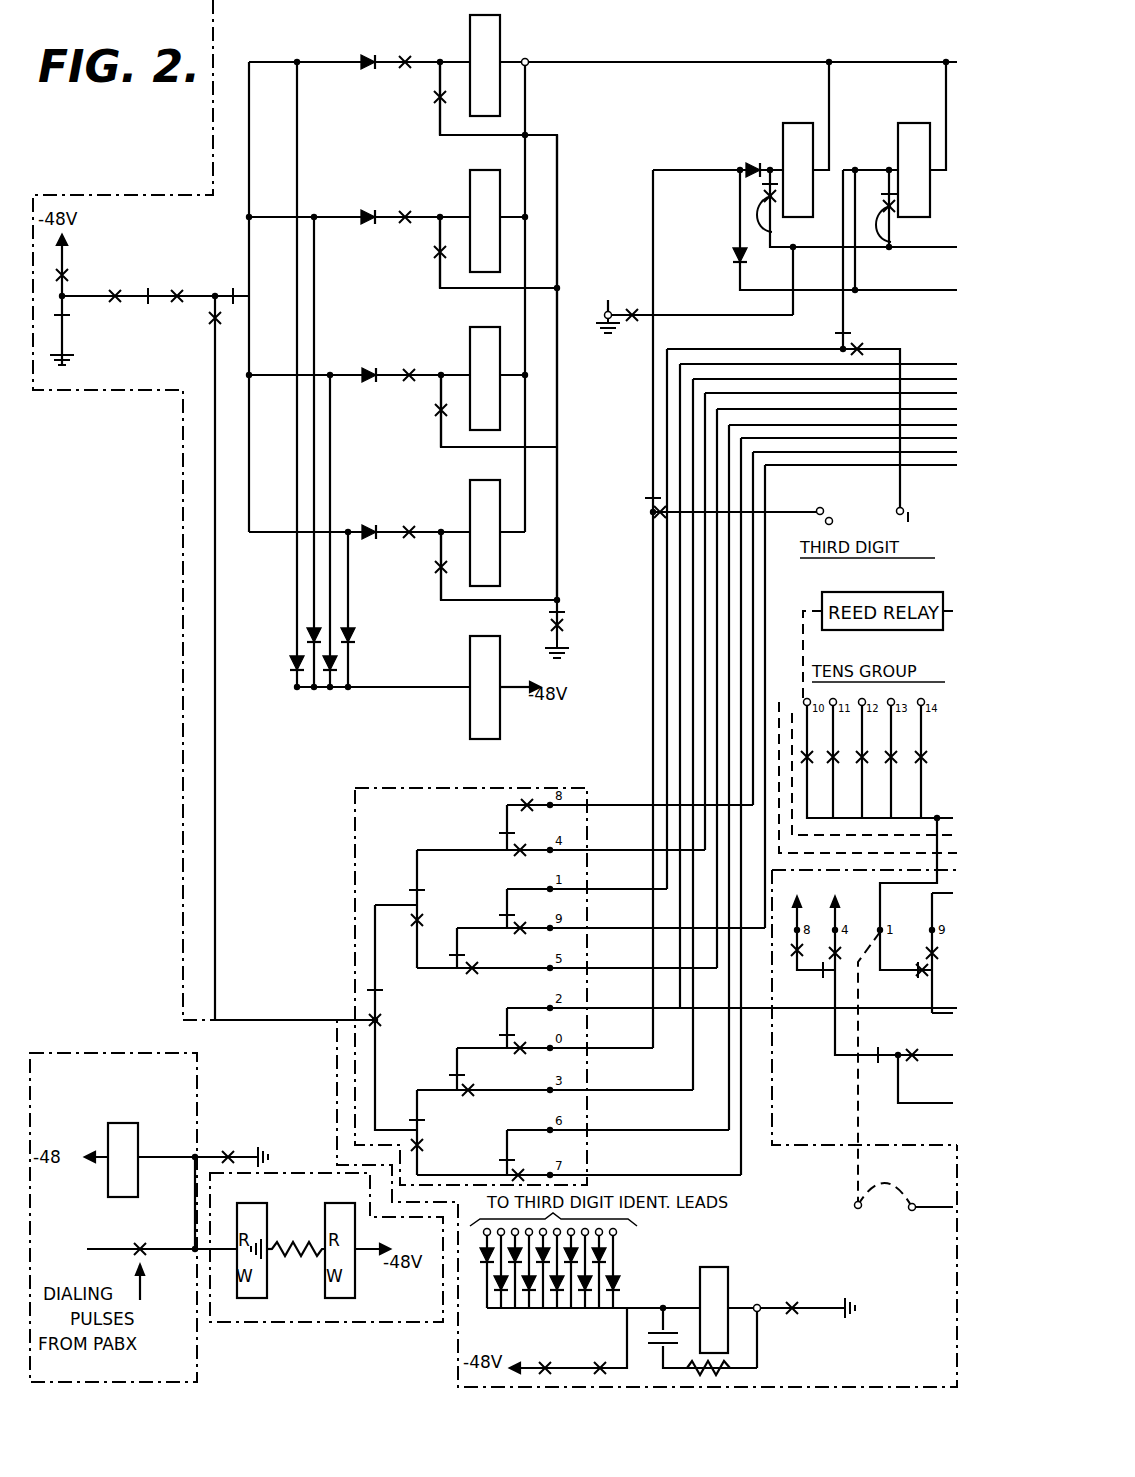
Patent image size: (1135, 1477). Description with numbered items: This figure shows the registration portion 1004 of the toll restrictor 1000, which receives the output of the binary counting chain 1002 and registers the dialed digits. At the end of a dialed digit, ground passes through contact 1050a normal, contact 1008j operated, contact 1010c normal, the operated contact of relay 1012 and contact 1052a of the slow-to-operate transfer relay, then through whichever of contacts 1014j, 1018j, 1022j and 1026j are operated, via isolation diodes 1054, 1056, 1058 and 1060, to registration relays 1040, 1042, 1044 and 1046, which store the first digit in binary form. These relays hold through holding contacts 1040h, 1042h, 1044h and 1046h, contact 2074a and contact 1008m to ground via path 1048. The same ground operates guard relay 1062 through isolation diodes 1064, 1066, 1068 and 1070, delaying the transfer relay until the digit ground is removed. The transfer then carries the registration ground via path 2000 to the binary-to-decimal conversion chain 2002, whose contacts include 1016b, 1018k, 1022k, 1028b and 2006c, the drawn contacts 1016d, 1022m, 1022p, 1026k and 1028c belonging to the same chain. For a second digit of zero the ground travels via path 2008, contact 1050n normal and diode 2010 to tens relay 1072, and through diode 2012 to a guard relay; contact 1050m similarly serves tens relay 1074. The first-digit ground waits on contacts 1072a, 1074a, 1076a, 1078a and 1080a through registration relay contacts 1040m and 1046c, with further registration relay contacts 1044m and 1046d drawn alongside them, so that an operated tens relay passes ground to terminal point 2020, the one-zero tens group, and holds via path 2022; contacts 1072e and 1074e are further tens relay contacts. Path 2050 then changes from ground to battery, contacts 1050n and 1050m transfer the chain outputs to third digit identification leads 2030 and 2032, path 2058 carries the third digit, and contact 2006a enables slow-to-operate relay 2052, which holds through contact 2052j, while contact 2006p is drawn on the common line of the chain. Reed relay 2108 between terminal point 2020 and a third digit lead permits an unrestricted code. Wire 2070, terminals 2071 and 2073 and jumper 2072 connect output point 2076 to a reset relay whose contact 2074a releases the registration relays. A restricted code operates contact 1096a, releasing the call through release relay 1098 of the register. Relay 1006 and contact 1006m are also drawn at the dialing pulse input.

The toll restrictor 1000 is at (175, 560).
The binary counting chain portion 1002 is at (340, 1326).
The registration portion 1004 is at (175, 762).
The pulse relay and contact 1006 is at (142, 1242).
The relay contact 1006m is at (540, 1362).
The relay contact 1008j is at (120, 302).
The relay contact 1008m is at (632, 308).
The relay contact 1010c is at (146, 290).
The counting chain relay 1012 is at (174, 302).
The relay contact 1014j is at (410, 58).
The relay contact 1016b is at (530, 1162).
The relay contact 1016d is at (412, 907).
The relay contact 1018j is at (410, 212).
The relay contact 1018k is at (372, 1012).
The relay contact 1022j is at (412, 370).
The relay contact 1022k is at (422, 1140).
The relay contact 1022m is at (465, 974).
The relay contact 1022p is at (510, 846).
The relay contact 1026j is at (420, 516).
The relay contact 1026k is at (518, 806).
The relay contact 1028b is at (512, 1046).
The relay contact 1028c is at (512, 926).
The registration relay 1040 is at (500, 36).
The holding contact 1040h is at (434, 100).
The relay contact 1040m is at (905, 1052).
The registration relay 1042 is at (470, 178).
The holding contact 1042h is at (434, 255).
The registration relay 1044 is at (470, 333).
The holding contact 1044h is at (436, 412).
The relay contact 1044m is at (832, 975).
The registration relay 1046 is at (470, 488).
The relay contact 1046c is at (920, 975).
The relay contact 1046d is at (795, 955).
The holding contact 1046h is at (436, 570).
The holding path 1048 is at (557, 168).
The relay contact 1050a is at (64, 300).
The relay contact 1050m is at (858, 342).
The relay contact 1050n is at (652, 516).
The relay contact 1052a is at (217, 292).
The isolation diode 1054 is at (365, 58).
The isolation diode 1056 is at (365, 212).
The isolation diode 1058 is at (365, 370).
The isolation diode 1060 is at (365, 527).
The guard relay 1062 is at (500, 636).
The isolation diode 1064 is at (290, 662).
The isolation diode 1066 is at (306, 628).
The isolation diode 1068 is at (338, 664).
The isolation diode 1070 is at (356, 632).
The tens relay 1072 is at (790, 123).
The tens relay contact 1072a is at (810, 762).
The relay contact 1072e is at (770, 228).
The tens relay 1074 is at (915, 123).
The tens relay contact 1074a is at (866, 755).
The relay contact 1074e is at (889, 228).
The tens relay contact 1076a is at (865, 762).
The tens relay contact 1078a is at (908, 742).
The tens relay contact 1080a is at (930, 750).
The relay contact 1096a is at (228, 1150).
The release relay 1098 is at (125, 1110).
The path 2000 is at (183, 670).
The binary-to-decimal conversion chain 2002 is at (355, 830).
The relay contact 2006a is at (794, 1314).
The relay contact 2006c is at (466, 1096).
The relay contact 2006p is at (580, 517).
The path 2008 is at (653, 665).
The diode 2010 is at (750, 160).
The diode 2012 is at (733, 250).
The terminal point 2020 is at (797, 704).
The path 2022 is at (685, 315).
The third digit identification lead 2030 is at (816, 506).
The third digit identification lead 2032 is at (898, 508).
The path 2050 is at (88, 290).
The slow to operate relay 2052 is at (728, 1276).
The holding contact 2052j is at (598, 1360).
The path 2058 is at (715, 1140).
The wire 2070 is at (858, 1110).
The first connector terminal 2071 is at (856, 1212).
The jumper 2072 is at (888, 1188).
The second connector terminal 2073 is at (910, 1212).
The relay contact 2074a is at (560, 603).
The output point 2076 is at (875, 930).
The reed relay 2108 is at (860, 592).